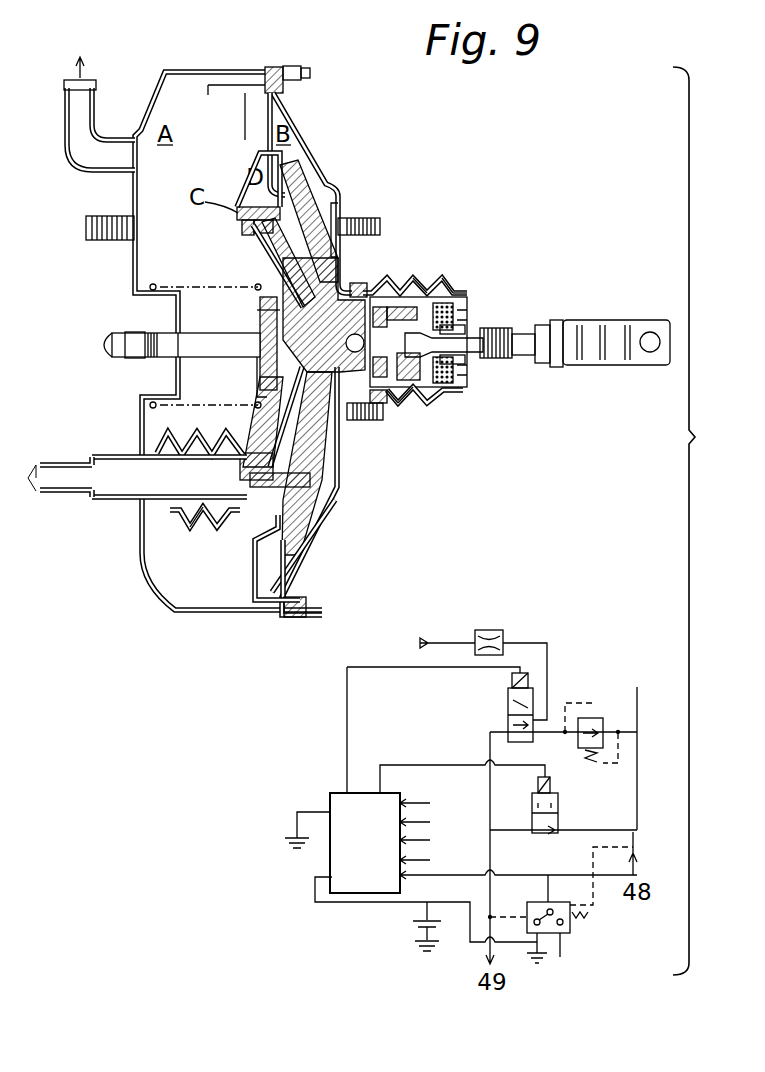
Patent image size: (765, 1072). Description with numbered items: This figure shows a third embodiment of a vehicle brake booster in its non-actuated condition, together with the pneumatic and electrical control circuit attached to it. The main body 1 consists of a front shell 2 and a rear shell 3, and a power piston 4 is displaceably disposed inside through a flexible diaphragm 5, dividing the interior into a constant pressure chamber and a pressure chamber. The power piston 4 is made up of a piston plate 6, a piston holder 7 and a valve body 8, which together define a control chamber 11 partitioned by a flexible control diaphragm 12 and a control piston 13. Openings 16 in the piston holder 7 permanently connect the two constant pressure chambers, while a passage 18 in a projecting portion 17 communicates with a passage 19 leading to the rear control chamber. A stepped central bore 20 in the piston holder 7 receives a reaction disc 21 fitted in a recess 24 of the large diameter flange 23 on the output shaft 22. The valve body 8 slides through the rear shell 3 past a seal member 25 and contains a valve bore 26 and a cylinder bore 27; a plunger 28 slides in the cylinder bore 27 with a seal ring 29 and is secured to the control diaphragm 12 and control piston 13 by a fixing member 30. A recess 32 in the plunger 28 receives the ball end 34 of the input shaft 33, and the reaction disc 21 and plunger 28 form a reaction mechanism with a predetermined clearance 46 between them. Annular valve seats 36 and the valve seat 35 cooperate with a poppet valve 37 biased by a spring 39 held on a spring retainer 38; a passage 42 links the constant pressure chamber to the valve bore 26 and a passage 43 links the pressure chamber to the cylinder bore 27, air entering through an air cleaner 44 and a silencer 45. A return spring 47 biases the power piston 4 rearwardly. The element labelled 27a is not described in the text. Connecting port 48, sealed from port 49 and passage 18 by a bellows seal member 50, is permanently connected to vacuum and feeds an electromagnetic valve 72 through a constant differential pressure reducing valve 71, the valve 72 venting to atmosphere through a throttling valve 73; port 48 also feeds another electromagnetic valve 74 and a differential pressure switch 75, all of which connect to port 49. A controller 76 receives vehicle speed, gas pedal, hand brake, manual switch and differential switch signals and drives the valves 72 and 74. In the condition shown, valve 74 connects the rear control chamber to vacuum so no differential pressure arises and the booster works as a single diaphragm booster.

The main body 1 is at (176, 63).
The front shell 2 is at (200, 78).
The rear shell 3 is at (305, 158).
The power piston 4 is at (231, 185).
The flexible diaphragm 5 is at (224, 90).
The piston plate 6 is at (268, 135).
The piston holder 7 is at (240, 229).
The valve body 8 is at (305, 186).
The control chamber 11 is at (320, 218).
The flexible control diaphragm 12 is at (332, 497).
The control piston 13 is at (262, 440).
The openings 16 is at (258, 262).
The projecting portion 17 is at (180, 524).
The passage 18 is at (253, 522).
The passage 19 is at (310, 548).
The stepped central bore 20 is at (258, 318).
The reaction disc 21 is at (262, 372).
The output shaft 22 is at (203, 328).
The large diameter flange 23 is at (240, 400).
The recess 24 is at (178, 386).
The seal member 25 is at (378, 292).
The valve bore 26 is at (458, 382).
The cylinder bore 27 is at (385, 402).
The seal ring 27a is at (392, 290).
The plunger 28 is at (340, 457).
The seal ring 29 is at (340, 258).
The fixing member 30 is at (337, 505).
The recess 32 is at (410, 392).
The input shaft 33 is at (470, 337).
The ball end 34 is at (400, 402).
The valve seat 35 is at (483, 330).
The annular valve seats 36 is at (440, 402).
The poppet valve 37 is at (423, 290).
The spring retainer 38 is at (540, 368).
The spring 39 is at (440, 295).
The passage 42 is at (346, 222).
The passage 43 is at (357, 420).
The air cleaner 44 is at (455, 320).
The silencer 45 is at (465, 300).
The clearance 46 is at (248, 347).
The return spring 47 is at (160, 285).
The connecting port 48 is at (110, 90).
The connecting port 49 is at (110, 455).
The seal member 50 is at (210, 525).
The constant differential pressure reducing valve 71 is at (598, 718).
The electromagnetic valve 72 is at (505, 705).
The throttling valve 73 is at (503, 636).
The electromagnetic valve 74 is at (558, 808).
The differential pressure switch 75 is at (567, 945).
The controller 76 is at (405, 795).